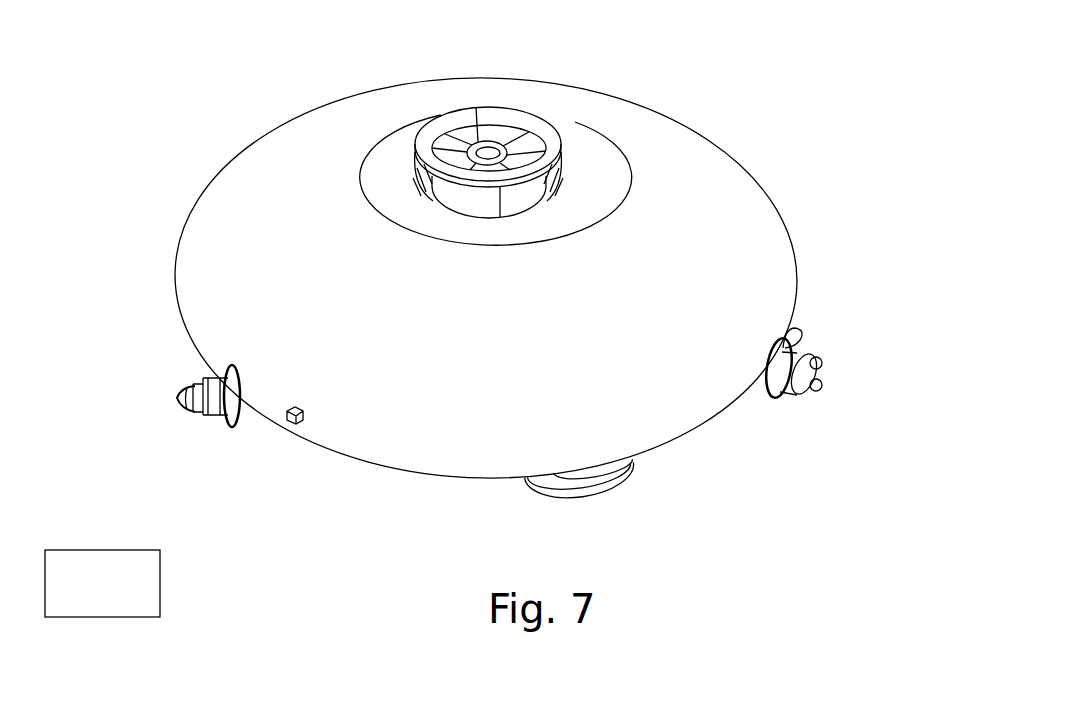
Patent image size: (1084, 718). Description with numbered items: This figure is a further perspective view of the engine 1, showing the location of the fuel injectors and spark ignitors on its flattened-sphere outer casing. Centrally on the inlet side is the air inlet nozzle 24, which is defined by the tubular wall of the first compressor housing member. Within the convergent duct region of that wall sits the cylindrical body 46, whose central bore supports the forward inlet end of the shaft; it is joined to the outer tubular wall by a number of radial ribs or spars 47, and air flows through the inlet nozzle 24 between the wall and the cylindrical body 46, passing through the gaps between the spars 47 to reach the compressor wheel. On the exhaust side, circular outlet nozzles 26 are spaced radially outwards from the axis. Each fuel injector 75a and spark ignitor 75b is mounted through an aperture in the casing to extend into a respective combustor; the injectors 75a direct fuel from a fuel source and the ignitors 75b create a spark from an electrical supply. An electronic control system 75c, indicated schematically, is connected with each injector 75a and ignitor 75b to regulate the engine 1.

The engine 1 is at (762, 128).
The air inlet nozzle 24 is at (537, 127).
The cylindrical body 46 is at (530, 158).
The radial ribs or spars 47 is at (462, 160).
The circular outlet nozzles 26 is at (622, 475).
The fuel injector 75a is at (183, 388).
The spark ignitor 75b is at (286, 421).
The electronic control system 75c is at (342, 453).